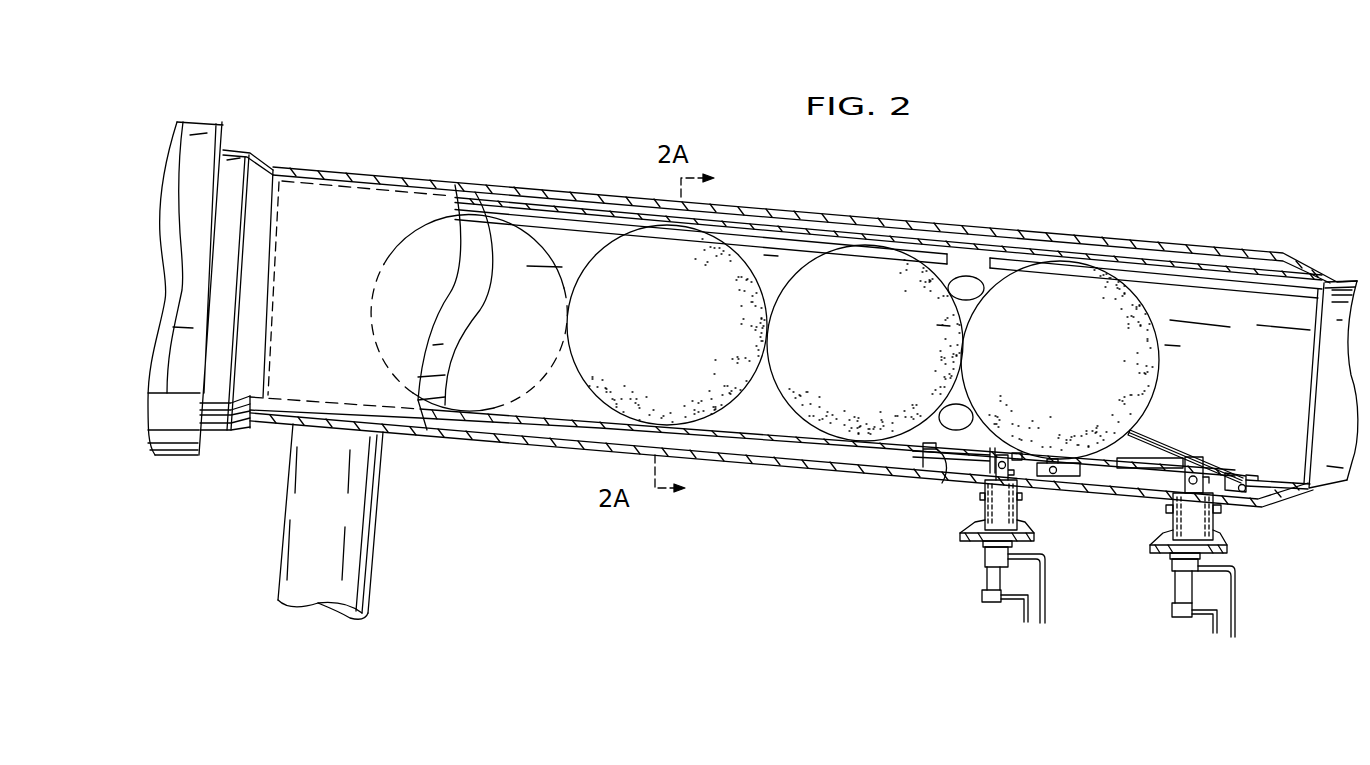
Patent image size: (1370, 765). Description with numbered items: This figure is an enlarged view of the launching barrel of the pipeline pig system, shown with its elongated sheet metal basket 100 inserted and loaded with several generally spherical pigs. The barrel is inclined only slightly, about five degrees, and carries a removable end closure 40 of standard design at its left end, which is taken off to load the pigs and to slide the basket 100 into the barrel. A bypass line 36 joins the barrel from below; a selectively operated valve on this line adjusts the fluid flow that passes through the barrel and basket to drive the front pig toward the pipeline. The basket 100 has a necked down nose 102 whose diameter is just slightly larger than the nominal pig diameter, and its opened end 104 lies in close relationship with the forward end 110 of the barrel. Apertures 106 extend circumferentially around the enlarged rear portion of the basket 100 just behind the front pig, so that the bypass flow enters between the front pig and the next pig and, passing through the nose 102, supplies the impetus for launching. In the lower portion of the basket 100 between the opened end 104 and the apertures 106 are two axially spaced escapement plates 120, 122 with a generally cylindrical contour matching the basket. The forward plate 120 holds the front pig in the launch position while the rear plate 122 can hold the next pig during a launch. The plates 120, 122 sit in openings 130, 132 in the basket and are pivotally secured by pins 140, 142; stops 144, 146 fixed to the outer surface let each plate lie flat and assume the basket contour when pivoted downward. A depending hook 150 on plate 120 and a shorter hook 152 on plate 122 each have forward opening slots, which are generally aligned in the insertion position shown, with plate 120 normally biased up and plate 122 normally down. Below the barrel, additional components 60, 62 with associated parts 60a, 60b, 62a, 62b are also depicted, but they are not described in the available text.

The bypass line 36 is at (353, 552).
The end closure 40 is at (207, 130).
The valve 60 is at (1222, 540).
The valve pipe 60a is at (1215, 632).
The valve pipe 60b is at (1237, 606).
The valve 62 is at (1025, 513).
The valve pipe 62a is at (1028, 620).
The valve pipe 62b is at (1047, 596).
The basket 100 is at (912, 226).
The nose 102 is at (1204, 268).
The opened end 104 is at (1304, 457).
The apertures 106 is at (968, 280).
The forward end 110 is at (1346, 281).
The escapement plate 120 is at (1170, 430).
The escapement plate 122 is at (968, 446).
The opening 130 is at (1145, 468).
The opening 132 is at (950, 478).
The pins 140 is at (1250, 474).
The pins 142 is at (1051, 465).
The stop 144 is at (1110, 472).
The stop 146 is at (928, 457).
The hook 150 is at (1195, 462).
The hook 152 is at (1018, 455).